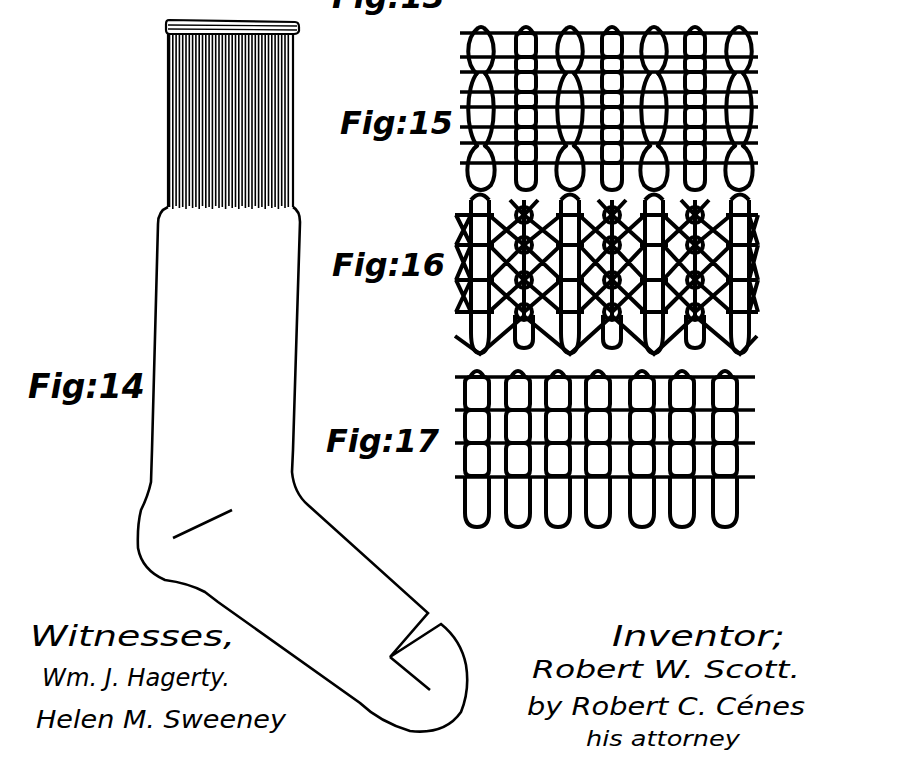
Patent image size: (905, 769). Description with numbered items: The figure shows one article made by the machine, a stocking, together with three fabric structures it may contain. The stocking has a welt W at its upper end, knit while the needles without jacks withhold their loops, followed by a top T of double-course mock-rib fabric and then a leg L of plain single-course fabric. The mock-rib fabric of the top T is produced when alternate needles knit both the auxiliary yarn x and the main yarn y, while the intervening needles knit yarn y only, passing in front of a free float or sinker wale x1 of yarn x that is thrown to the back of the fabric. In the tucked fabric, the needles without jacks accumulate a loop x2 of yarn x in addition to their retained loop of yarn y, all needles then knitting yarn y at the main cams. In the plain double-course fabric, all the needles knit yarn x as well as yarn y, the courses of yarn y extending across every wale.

In FIG. 14, the welt W is at (210, 30).
In FIG. 14, the top T is at (205, 121).
In FIG. 14, the leg L is at (208, 328).
In FIG. 15, the auxiliary yarn x is at (762, 92).
In FIG. 16, the auxiliary yarn x is at (752, 266).
In FIG. 17, the auxiliary yarn x is at (754, 380).
In FIG. 15, the main yarn y is at (757, 33).
In FIG. 16, the main yarn y is at (752, 212).
In FIG. 17, the main yarn y is at (752, 412).
In FIG. 15, the free float of yarn x x1 is at (570, 36).
In FIG. 16, the accumulated loop of yarn x x2 is at (752, 293).